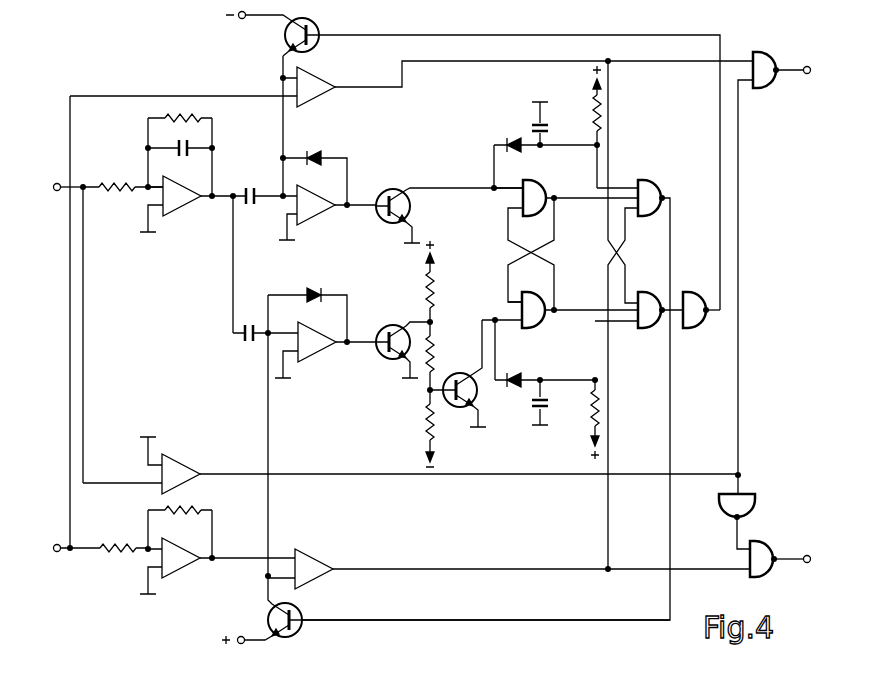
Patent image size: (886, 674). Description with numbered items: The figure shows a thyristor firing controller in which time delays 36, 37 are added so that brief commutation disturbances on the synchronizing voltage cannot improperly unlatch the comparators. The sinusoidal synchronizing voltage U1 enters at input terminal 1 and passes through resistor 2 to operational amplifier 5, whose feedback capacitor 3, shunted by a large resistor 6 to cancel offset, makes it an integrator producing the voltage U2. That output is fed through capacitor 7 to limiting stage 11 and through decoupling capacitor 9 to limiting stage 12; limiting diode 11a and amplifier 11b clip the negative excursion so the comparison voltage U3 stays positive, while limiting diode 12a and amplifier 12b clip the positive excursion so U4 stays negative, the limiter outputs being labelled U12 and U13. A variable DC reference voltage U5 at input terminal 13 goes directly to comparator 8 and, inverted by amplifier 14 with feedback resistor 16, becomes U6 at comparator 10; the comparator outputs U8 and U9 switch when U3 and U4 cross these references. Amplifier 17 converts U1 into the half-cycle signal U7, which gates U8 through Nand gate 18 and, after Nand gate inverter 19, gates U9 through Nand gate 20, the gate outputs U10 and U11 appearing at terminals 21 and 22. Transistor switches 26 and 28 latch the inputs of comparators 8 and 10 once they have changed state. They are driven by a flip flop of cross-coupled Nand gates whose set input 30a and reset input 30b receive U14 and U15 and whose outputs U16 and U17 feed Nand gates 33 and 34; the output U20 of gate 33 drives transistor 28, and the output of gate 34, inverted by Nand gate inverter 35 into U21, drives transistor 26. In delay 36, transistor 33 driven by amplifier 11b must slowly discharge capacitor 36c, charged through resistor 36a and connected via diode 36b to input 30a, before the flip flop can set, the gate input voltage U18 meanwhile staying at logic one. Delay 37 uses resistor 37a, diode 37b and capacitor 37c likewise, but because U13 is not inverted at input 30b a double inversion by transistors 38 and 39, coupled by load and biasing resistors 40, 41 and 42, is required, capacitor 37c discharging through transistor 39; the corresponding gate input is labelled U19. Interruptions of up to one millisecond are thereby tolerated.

The input terminal 1 is at (60, 184).
The resistor 2 is at (109, 184).
The capacitor 3 is at (177, 143).
The operational amplifier 5 is at (194, 204).
The resistor 6 is at (190, 119).
The capacitor 7 is at (246, 188).
The comparator 8 is at (320, 100).
The decoupling capacitor 9 is at (246, 326).
The comparator 10 is at (308, 555).
The limiting stage 11 is at (338, 193).
The limiting diode 11a is at (322, 153).
The operational amplifier 11b is at (321, 214).
The limiting stage 12 is at (337, 323).
The limiting diode 12a is at (322, 356).
The operational amplifier 12b is at (323, 292).
The input terminal 13 is at (60, 546).
The amplifier 14 is at (188, 585).
The feedback resistor 16 is at (168, 508).
The amplifier 17 is at (174, 459).
The Nand gate 18 is at (760, 56).
The Nand gate inverter 19 is at (758, 502).
The Nand gate 20 is at (760, 546).
The output terminal 21 is at (807, 66).
The output terminal 22 is at (807, 555).
The transistor switch 26 is at (318, 45).
The transistor switch 28 is at (300, 610).
The set input 30a is at (525, 186).
The reset input 30b is at (520, 322).
The transistor / Nand gate 33 is at (392, 189).
The Nand gate 34 is at (650, 326).
The Nand gate inverter 35 is at (700, 324).
The time delay 36 is at (522, 125).
The resistor 36a is at (597, 110).
The diode 36b is at (505, 141).
The capacitor 36c is at (546, 127).
The time delay 37 is at (522, 413).
The resistor 37a is at (590, 414).
The diode 37b is at (516, 374).
The capacitor 37c is at (546, 414).
The transistor 38 is at (392, 326).
The transistor 39 is at (463, 373).
The load and biasing resistor 40 is at (435, 296).
The load and biasing resistor 41 is at (435, 349).
The load and biasing resistor 42 is at (428, 426).
The synchronizing voltage U1 is at (61, 190).
The integrator output voltage U2 is at (204, 193).
The comparison voltage U3 is at (272, 191).
The comparison voltage U4 is at (272, 333).
The reference voltage U5 is at (61, 552).
The inverted reference voltage U6 is at (205, 575).
The output voltage of amplifier 17 U7 is at (205, 477).
The comparator 8 output U8 is at (335, 88).
The comparator 10 output U9 is at (335, 570).
The output voltage U10 is at (798, 95).
The output voltage U11 is at (776, 566).
The voltage U12 is at (336, 207).
The limiter 12 output voltage U13 is at (338, 345).
The flip flop input voltage U14 is at (494, 191).
The flip flop input voltage U15 is at (494, 318).
The flip flop output U16 is at (557, 190).
The flip flop output U17 is at (549, 313).
The third gate input voltage U18 is at (597, 178).
The voltage U19 is at (598, 344).
The output of Nand gate 33 U20 is at (678, 198).
The output of inverter 35 U21 is at (707, 312).